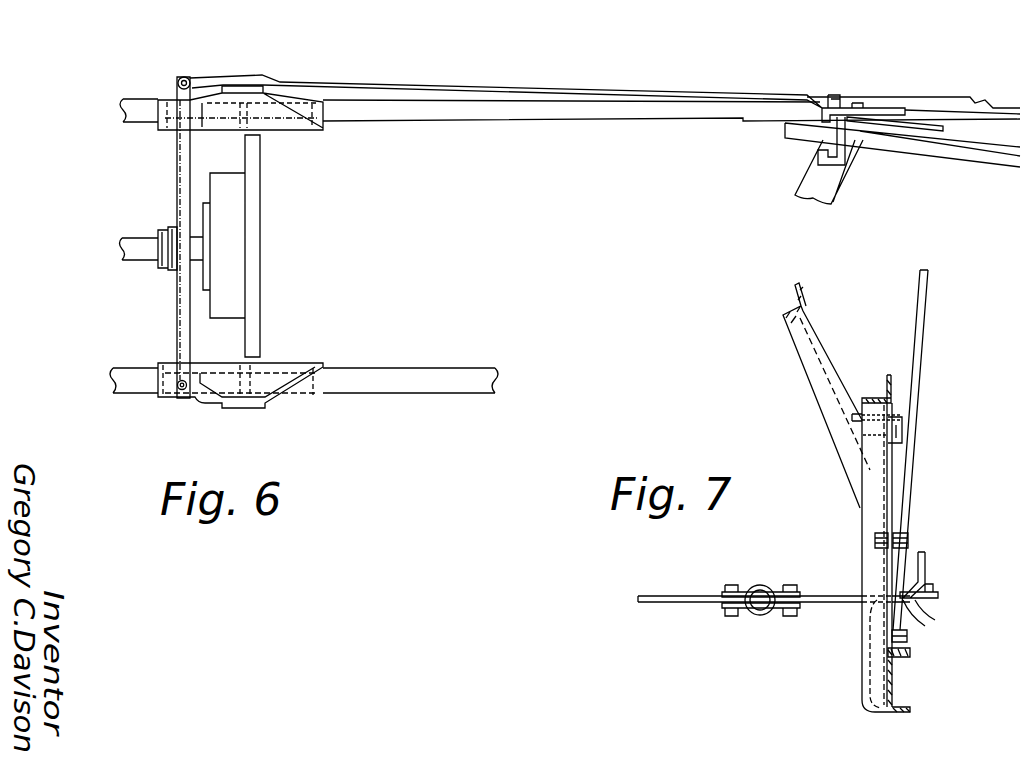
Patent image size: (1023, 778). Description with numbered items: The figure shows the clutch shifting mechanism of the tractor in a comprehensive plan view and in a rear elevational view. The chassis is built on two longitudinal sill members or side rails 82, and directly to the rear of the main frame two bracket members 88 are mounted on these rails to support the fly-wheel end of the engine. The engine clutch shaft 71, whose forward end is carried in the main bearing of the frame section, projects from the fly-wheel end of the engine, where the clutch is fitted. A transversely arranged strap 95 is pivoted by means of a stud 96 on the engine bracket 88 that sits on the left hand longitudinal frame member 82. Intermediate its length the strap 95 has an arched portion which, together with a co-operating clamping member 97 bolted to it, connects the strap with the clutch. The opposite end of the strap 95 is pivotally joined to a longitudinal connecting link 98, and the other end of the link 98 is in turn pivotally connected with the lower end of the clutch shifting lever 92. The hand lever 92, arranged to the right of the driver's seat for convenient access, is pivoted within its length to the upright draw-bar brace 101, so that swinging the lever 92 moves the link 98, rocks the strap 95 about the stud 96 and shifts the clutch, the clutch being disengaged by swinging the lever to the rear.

In FIG. 6, the engine clutch shaft 71 is at (140, 247).
In FIG. 6, the longitudinal sill members 82 is at (128, 110).
In FIG. 7, the longitudinal sill members 82 is at (892, 686).
In FIG. 6, the bracket members 88 is at (293, 127).
In FIG. 6, the clutch shifting lever 92 is at (887, 108).
In FIG. 7, the clutch shifting lever 92 is at (912, 388).
In FIG. 6, the strap 95 is at (182, 297).
In FIG. 7, the strap 95 is at (670, 600).
In FIG. 6, the stud 96 is at (181, 391).
In FIG. 7, the clamping member 97 is at (760, 613).
In FIG. 6, the connecting link 98 is at (452, 68).
In FIG. 7, the connecting link 98 is at (922, 622).
In FIG. 6, the draw-bar brace 101 is at (968, 150).
In FIG. 7, the draw-bar brace 101 is at (870, 507).